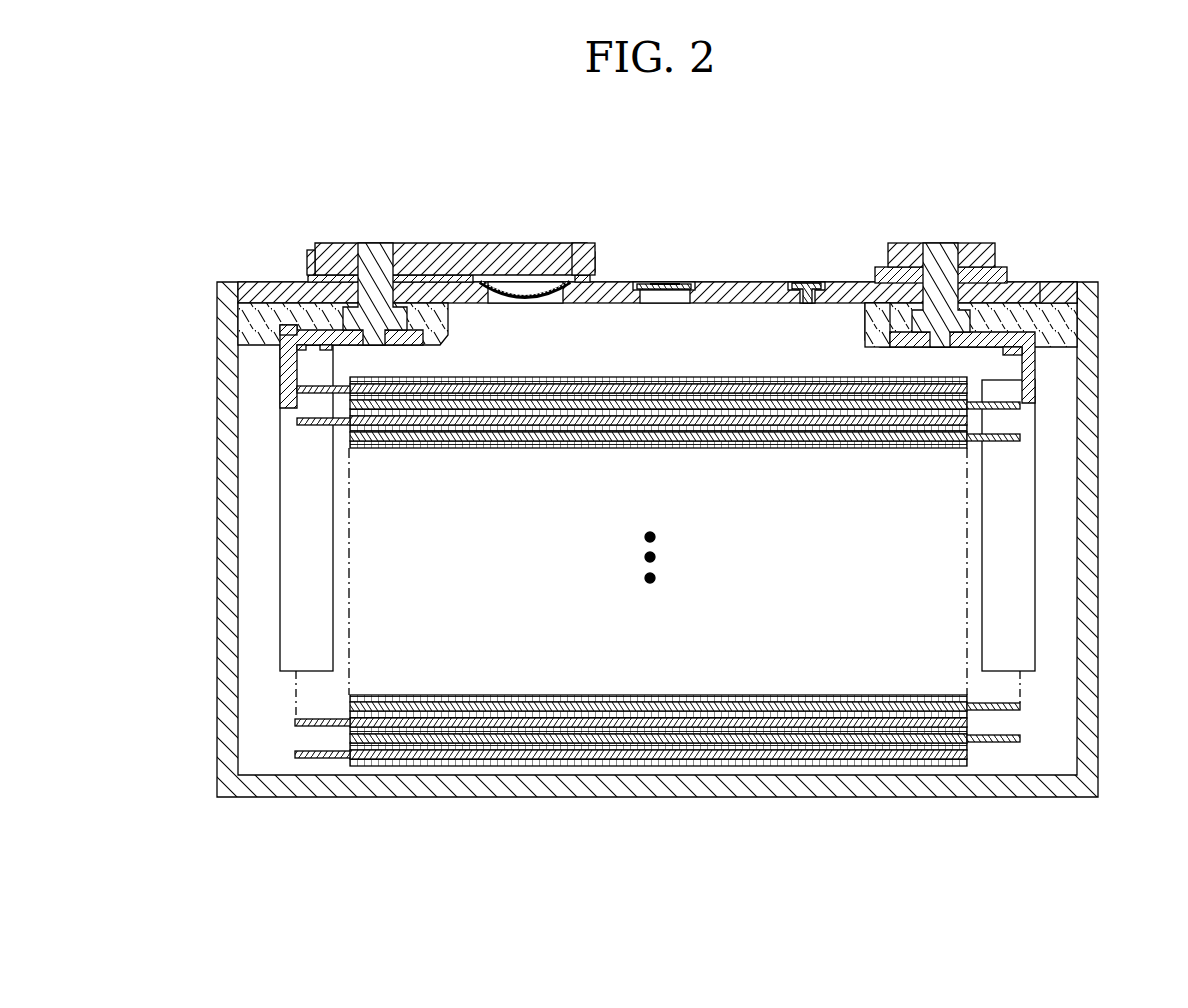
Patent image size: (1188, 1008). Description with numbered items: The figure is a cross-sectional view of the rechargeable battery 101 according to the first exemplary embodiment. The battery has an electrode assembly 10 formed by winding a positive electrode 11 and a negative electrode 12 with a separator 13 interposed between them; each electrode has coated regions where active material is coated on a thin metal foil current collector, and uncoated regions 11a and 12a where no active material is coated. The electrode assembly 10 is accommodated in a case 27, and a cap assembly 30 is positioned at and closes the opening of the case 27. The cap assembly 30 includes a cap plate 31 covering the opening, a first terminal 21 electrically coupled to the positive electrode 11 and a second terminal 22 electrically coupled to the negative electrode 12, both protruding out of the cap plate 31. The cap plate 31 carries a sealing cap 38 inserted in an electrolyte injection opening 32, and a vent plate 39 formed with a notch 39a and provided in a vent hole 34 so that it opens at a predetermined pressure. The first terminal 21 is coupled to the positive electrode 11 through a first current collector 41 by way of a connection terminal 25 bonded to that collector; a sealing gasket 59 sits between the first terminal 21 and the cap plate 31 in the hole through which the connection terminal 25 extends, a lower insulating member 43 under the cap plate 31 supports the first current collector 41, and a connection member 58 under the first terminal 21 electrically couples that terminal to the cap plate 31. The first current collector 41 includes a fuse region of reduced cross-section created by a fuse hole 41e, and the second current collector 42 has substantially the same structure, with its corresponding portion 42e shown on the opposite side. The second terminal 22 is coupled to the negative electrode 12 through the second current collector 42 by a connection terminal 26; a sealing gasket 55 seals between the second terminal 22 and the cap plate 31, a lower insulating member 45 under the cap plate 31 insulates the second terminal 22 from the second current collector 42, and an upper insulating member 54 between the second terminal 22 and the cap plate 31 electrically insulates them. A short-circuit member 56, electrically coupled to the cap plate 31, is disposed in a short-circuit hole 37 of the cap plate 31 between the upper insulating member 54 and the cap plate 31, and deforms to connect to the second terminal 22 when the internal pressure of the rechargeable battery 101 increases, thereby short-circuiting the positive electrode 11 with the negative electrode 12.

The rechargeable battery 101 is at (759, 137).
The electrode assembly 10 is at (658, 617).
The positive electrode 11 is at (865, 740).
The uncoated region 11a is at (1000, 743).
The negative electrode 12 is at (445, 757).
The uncoated region 12a is at (315, 757).
The separator 13 is at (661, 731).
The first terminal 21 is at (970, 258).
The second terminal 22 is at (340, 252).
The connection terminal 25 is at (940, 262).
The connection terminal 26 is at (376, 262).
The case 27 is at (1093, 582).
The cap assembly 30 is at (623, 278).
The cap plate 31 is at (1058, 295).
The electrolyte injection opening 32 is at (808, 303).
The vent hole 34 is at (663, 303).
The short-circuit hole 37 is at (500, 290).
The sealing cap 38 is at (808, 290).
The vent plate 39 is at (690, 285).
The notch 39a is at (663, 284).
The first current collector 41 is at (1037, 456).
The fuse hole 41e is at (1003, 340).
The second current collector 42 is at (282, 400).
The negative current collector upper end 42e is at (315, 326).
The lower insulating member 43 is at (1055, 330).
The lower insulating member 45 is at (255, 322).
The upper insulating member 54 is at (594, 262).
The sealing gasket 55 is at (318, 293).
The short-circuit member 56 is at (528, 294).
The connection member 58 is at (1000, 277).
The sealing gasket 59 is at (885, 300).